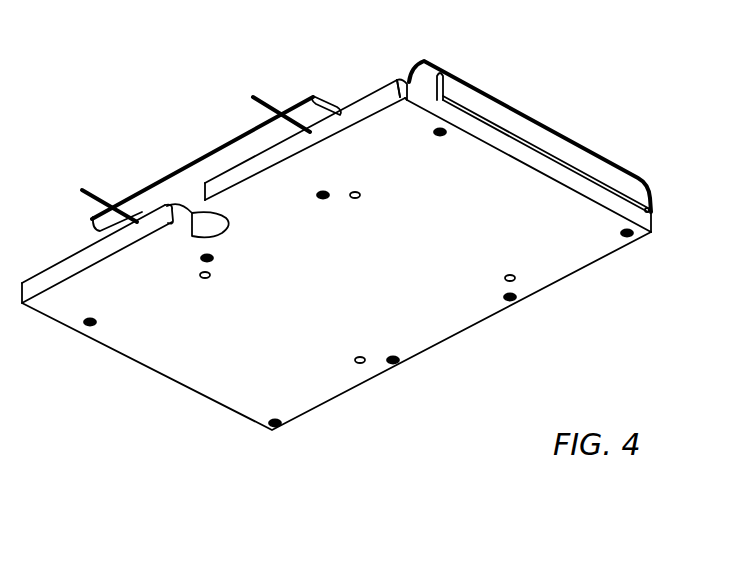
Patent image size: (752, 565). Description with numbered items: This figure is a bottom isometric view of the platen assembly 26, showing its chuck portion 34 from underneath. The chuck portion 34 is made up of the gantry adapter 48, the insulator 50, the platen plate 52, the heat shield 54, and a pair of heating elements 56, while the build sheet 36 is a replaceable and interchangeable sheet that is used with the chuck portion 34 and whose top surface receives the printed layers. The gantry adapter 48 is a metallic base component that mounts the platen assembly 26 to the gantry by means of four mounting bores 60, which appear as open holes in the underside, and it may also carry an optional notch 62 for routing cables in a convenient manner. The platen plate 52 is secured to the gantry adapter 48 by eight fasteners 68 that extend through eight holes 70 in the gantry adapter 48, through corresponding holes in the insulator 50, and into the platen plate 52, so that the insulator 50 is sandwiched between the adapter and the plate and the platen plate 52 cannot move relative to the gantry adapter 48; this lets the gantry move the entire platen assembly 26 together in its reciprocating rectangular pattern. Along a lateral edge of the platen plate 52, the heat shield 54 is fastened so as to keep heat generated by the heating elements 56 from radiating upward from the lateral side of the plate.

The platen assembly 26 is at (128, 90).
The chuck portion 34 is at (684, 187).
The build sheet 36 is at (413, 67).
The gantry adapter 48 is at (648, 210).
The insulator 50 is at (597, 178).
The platen plate 52 is at (565, 150).
The heat shield 54 is at (230, 143).
The heating elements 56 is at (258, 97).
The mounting bores 60 is at (357, 203).
The notch 62 is at (187, 203).
The fasteners 68 is at (95, 323).
The holes 70 is at (88, 330).